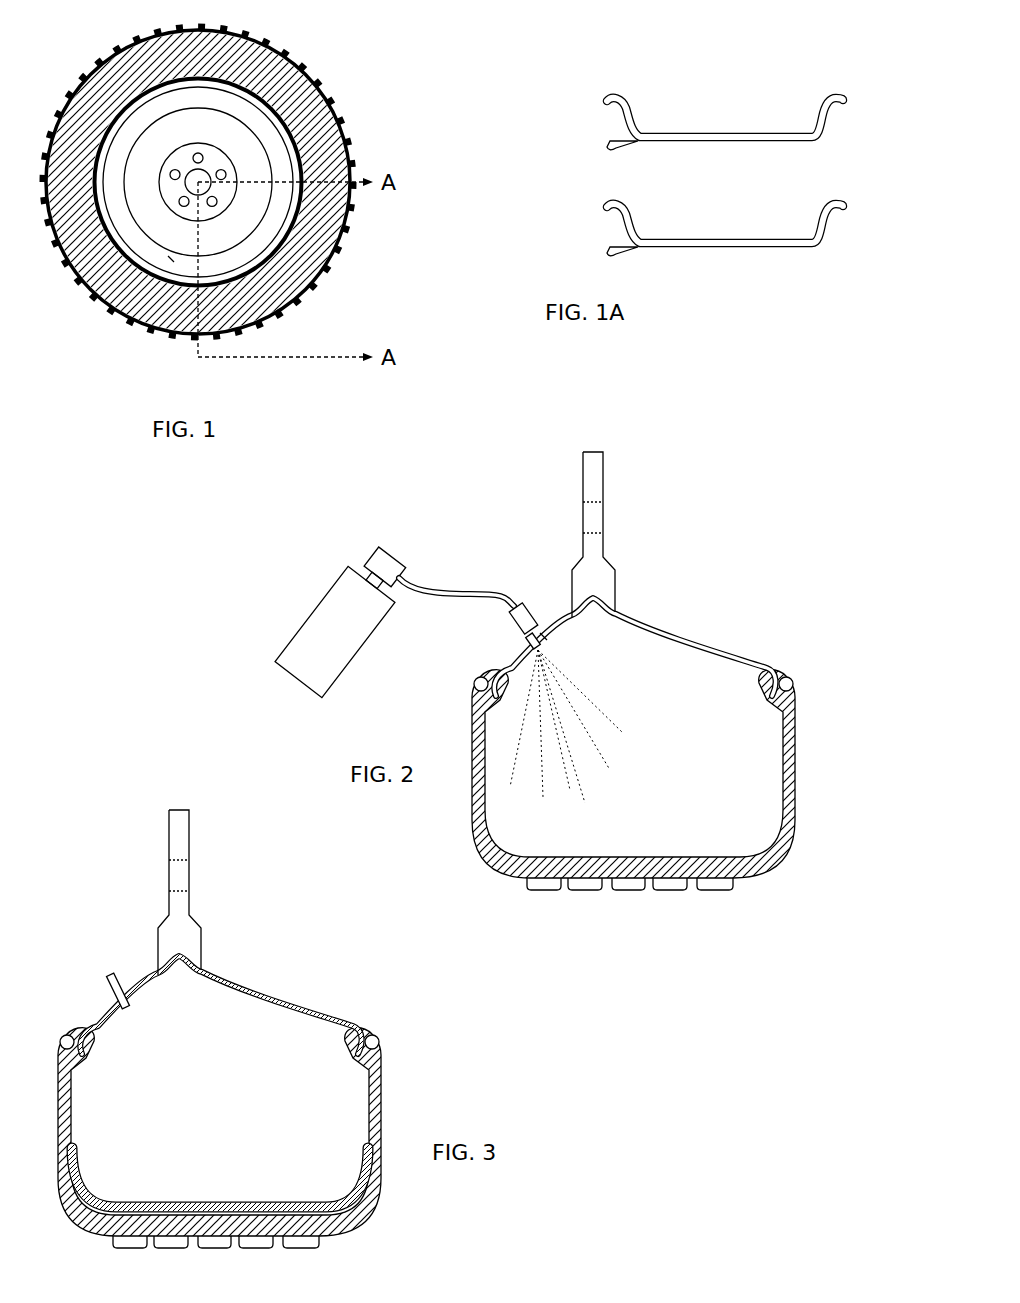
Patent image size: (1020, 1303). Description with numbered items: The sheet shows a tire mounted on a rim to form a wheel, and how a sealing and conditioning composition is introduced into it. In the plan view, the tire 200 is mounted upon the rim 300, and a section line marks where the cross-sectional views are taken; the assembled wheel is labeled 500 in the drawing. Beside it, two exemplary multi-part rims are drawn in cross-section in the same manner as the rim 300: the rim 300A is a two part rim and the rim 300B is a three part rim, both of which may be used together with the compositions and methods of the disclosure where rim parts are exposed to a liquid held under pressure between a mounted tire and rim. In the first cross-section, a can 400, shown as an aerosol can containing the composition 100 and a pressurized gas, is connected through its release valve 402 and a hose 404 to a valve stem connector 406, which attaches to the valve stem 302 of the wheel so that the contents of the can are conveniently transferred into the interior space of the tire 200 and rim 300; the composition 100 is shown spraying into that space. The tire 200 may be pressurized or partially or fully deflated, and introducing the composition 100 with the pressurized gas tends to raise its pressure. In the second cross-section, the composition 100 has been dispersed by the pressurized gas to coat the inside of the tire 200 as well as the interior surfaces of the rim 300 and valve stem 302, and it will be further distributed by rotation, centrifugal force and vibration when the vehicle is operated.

In FIG. 2, the composition 100 is at (620, 697).
In FIG. 3, the composition 100 is at (220, 1099).
In FIG. 1, the tire 200 is at (338, 123).
In FIG. 2, the tire 200 is at (633, 647).
In FIG. 3, the tire 200 is at (275, 971).
In FIG. 1, the rim 300 is at (170, 258).
In FIG. 2, the rim 300 is at (603, 577).
In FIG. 3, the rim 300 is at (134, 881).
In FIG. 1A, the two part rim 300A is at (700, 112).
In FIG. 1A, the three part rim 300B is at (725, 275).
In FIG. 2, the valve stem 302 is at (548, 624).
In FIG. 3, the valve stem 302 is at (76, 947).
In FIG. 2, the can 400 is at (310, 637).
In FIG. 2, the release valve 402 is at (385, 566).
In FIG. 2, the hose 404 is at (460, 583).
In FIG. 2, the valve stem connector 406 is at (515, 615).
In FIG. 1, the tire 500 is at (312, 53).
In FIG. 2, the tire 500 is at (633, 780).
In FIG. 3, the tire 500 is at (323, 1084).